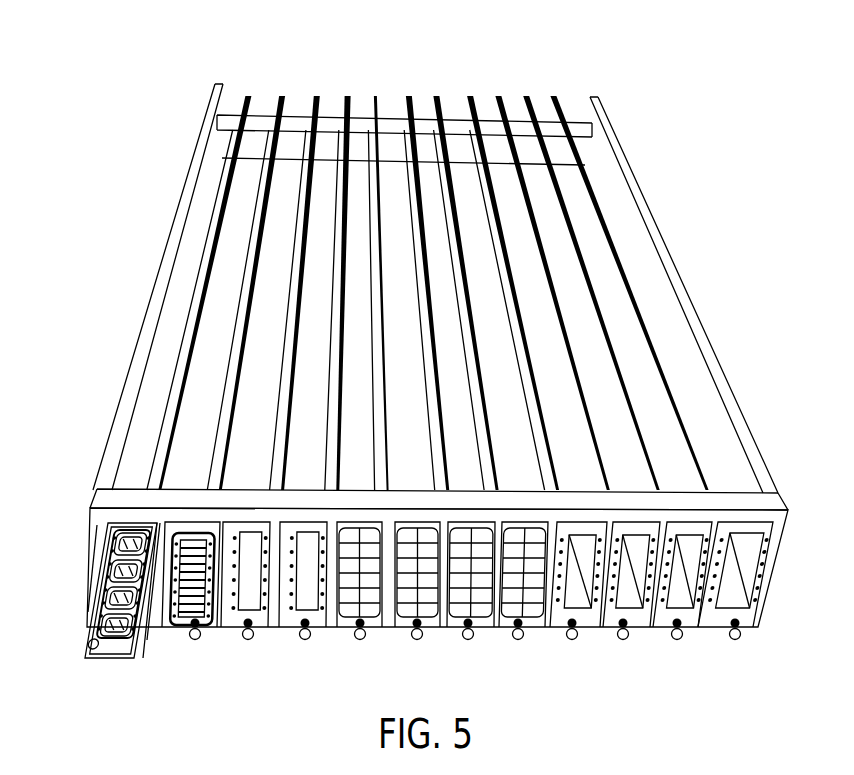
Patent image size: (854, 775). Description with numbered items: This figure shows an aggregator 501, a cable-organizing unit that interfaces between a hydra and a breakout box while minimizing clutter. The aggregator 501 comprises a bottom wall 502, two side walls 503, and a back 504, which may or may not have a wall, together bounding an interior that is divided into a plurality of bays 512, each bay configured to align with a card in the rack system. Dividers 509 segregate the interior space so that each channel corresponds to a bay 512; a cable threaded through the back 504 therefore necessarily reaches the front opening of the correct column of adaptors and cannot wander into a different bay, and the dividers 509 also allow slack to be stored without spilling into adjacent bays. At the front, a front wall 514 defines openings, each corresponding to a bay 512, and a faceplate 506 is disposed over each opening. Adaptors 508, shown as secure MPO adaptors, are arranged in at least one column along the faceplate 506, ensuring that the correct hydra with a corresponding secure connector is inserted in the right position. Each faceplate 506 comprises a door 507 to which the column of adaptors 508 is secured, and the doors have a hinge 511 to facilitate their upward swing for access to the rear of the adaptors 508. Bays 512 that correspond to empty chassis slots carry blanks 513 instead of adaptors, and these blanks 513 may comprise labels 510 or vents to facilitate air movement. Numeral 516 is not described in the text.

The aggregator 501 is at (168, 86).
The bottom wall 502 is at (437, 587).
The side walls 503 is at (690, 304).
The back 504 is at (388, 143).
The faceplate 506 is at (88, 638).
The door 507 is at (100, 660).
The adaptors 508 is at (178, 630).
The dividers 509 is at (248, 138).
The labels 510 is at (530, 612).
The hinge 511 is at (108, 526).
The bays 512 is at (148, 422).
The blanks 513 is at (478, 612).
The front wall 514 is at (95, 548).
The edge flange 516 is at (145, 635).